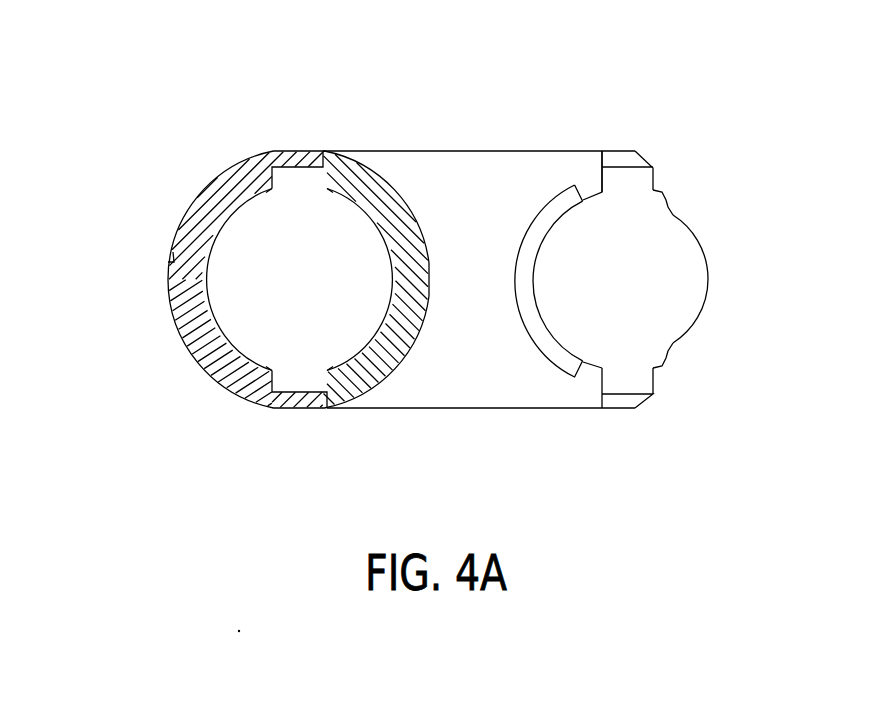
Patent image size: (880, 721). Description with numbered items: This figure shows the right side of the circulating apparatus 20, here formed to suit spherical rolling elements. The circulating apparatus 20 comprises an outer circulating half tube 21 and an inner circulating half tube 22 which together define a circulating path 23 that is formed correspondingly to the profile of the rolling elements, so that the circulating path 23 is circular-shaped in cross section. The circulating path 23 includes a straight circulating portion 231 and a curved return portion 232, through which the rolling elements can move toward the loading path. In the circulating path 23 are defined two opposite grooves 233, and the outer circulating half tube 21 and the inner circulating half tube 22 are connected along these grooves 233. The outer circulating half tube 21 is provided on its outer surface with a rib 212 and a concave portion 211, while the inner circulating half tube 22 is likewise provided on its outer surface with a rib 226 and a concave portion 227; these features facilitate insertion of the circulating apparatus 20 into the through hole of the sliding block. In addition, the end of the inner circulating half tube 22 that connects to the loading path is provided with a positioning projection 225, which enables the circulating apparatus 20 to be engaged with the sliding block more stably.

The circulating apparatus 20 is at (130, 83).
The outer circulating half tube 21 is at (232, 190).
The concave portion 211 is at (178, 328).
The rib 212 is at (167, 262).
The inner circulating half tube 22 is at (480, 187).
The positioning projection 225 is at (540, 338).
The rib 226 is at (428, 282).
The concave portion 227 is at (390, 190).
The circulating path 23 is at (677, 255).
The straight circulating portion 231 is at (255, 313).
The curved return portion 232 is at (653, 312).
The grooves 233 is at (295, 178).